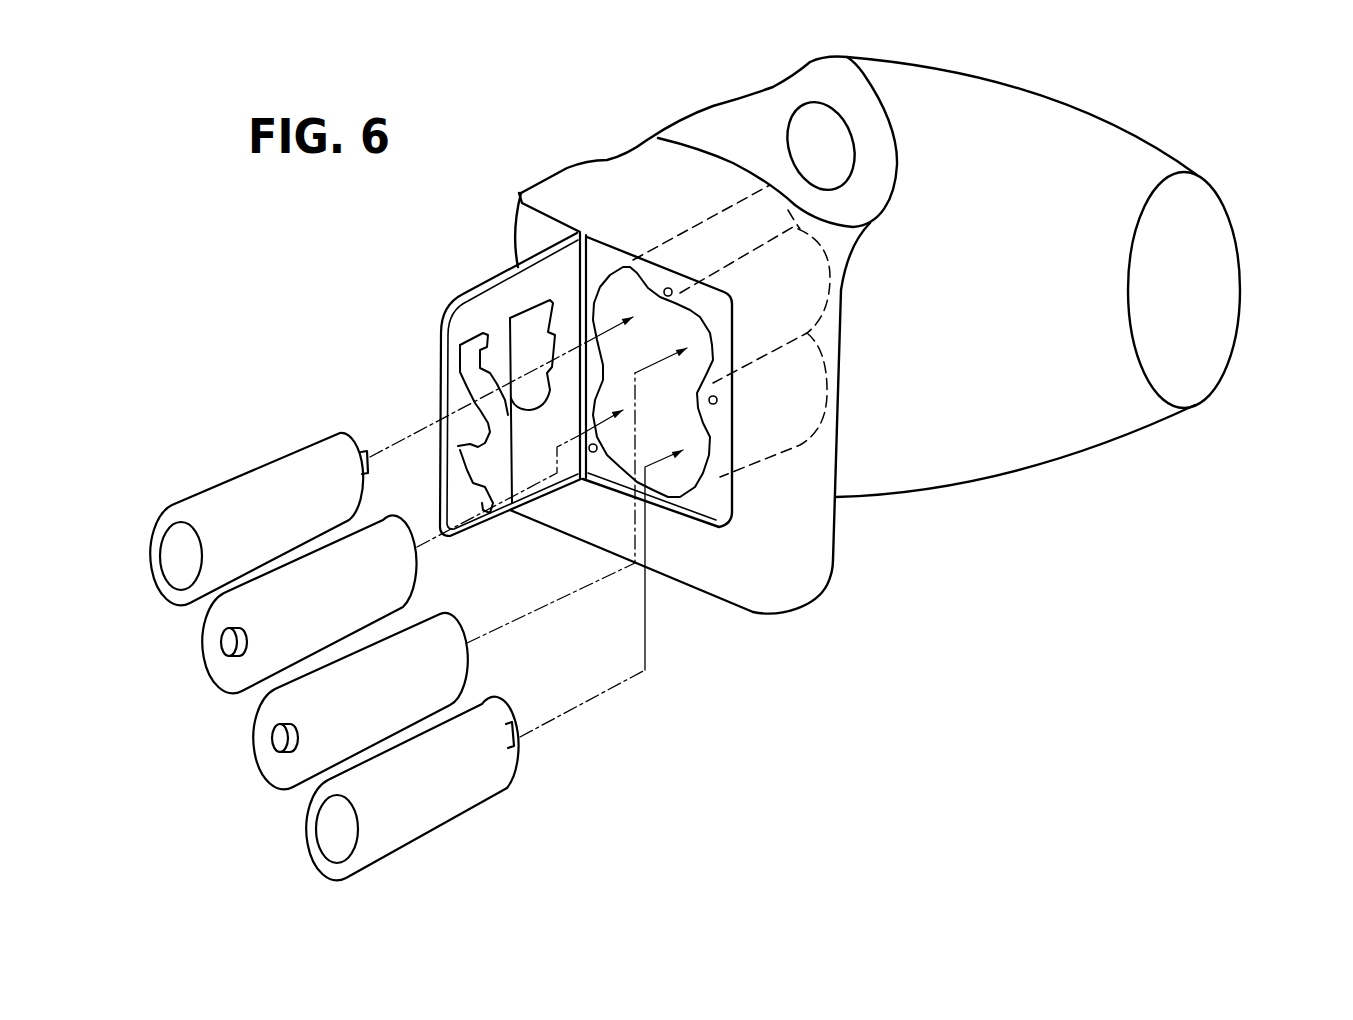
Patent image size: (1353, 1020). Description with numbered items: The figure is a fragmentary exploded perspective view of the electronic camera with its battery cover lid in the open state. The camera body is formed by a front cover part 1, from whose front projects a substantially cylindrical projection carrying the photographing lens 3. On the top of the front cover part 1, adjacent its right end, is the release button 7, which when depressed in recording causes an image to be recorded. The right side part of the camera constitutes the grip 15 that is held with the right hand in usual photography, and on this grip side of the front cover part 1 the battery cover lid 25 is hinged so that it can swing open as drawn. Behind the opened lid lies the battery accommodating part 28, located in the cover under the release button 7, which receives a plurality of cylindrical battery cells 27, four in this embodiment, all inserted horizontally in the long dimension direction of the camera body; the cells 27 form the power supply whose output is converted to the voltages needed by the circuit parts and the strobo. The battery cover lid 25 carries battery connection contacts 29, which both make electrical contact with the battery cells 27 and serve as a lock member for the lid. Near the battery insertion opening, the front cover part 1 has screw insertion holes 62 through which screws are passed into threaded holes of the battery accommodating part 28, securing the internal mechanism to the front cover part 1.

The front cover part 1 is at (755, 583).
The photographing lens 3 is at (1222, 305).
The release button 7 is at (800, 118).
The grip 15 is at (830, 590).
The battery cover lid 25 is at (453, 301).
The cylindrical battery cells 27 is at (250, 472).
The battery accommodating part 28 is at (831, 398).
The battery connection contacts 29 is at (527, 318).
The screw insertion holes 62 is at (593, 453).